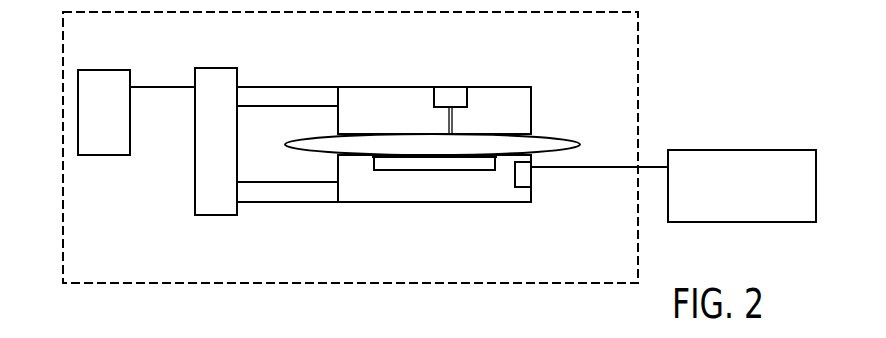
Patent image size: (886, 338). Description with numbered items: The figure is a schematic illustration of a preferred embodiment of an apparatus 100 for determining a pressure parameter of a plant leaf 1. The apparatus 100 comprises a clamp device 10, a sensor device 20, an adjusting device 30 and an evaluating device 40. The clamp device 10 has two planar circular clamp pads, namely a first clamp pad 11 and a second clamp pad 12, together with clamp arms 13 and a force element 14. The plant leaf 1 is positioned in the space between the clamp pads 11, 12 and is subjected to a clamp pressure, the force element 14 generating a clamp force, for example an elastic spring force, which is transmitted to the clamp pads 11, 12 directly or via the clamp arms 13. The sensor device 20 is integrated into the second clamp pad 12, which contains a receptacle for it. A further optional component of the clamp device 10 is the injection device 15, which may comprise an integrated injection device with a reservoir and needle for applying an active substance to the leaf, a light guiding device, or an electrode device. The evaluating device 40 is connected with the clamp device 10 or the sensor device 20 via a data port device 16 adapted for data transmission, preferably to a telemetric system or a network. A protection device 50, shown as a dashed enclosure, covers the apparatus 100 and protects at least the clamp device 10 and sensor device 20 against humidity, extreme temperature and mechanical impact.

The plant leaf 1 is at (547, 142).
The clamp device 10 is at (492, 87).
The first clamp pad 11 is at (378, 98).
The second clamp pad 12 is at (430, 190).
The clamp arms 13 is at (297, 198).
The force element 14 is at (205, 171).
The injection device 15 is at (455, 98).
The data port device 16 is at (520, 170).
The sensor device 20 is at (445, 163).
The adjusting device 30 is at (103, 145).
The evaluating device 40 is at (758, 206).
The protection device 50 is at (638, 112).
The apparatus 100 is at (233, 48).